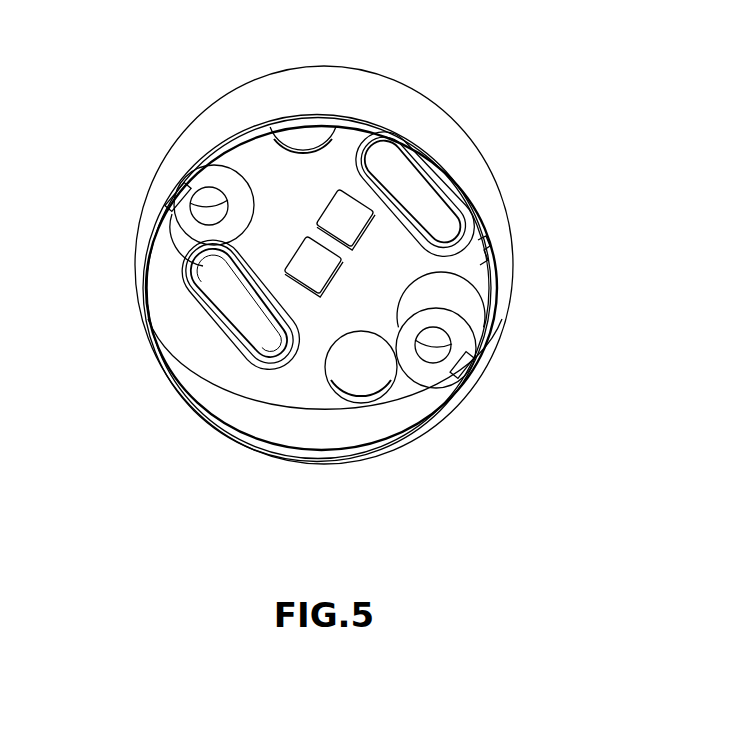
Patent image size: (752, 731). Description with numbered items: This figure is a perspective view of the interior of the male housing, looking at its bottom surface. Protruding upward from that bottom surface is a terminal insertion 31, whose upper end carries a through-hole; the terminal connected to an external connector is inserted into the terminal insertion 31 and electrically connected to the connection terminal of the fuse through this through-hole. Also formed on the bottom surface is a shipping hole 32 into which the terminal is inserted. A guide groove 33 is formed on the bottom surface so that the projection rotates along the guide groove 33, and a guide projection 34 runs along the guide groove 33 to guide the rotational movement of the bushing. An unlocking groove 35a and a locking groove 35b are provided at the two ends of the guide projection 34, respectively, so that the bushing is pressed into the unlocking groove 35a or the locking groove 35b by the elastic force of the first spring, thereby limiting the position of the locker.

The terminal insertion 31 is at (231, 158).
The shipping hole 32 is at (304, 128).
The guide groove 33 is at (228, 300).
The guide projection 34 is at (183, 410).
The unlocking groove 35a is at (200, 257).
The locking groove 35b is at (371, 150).